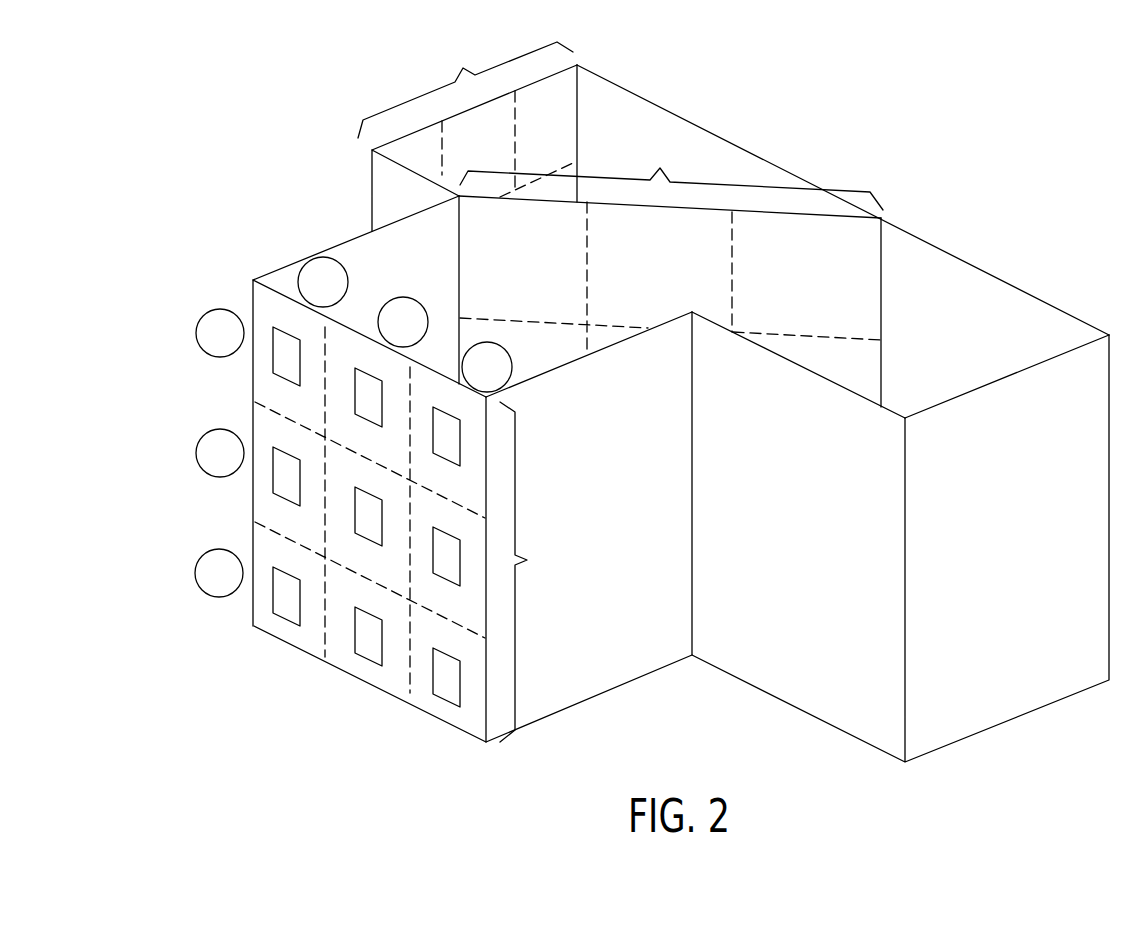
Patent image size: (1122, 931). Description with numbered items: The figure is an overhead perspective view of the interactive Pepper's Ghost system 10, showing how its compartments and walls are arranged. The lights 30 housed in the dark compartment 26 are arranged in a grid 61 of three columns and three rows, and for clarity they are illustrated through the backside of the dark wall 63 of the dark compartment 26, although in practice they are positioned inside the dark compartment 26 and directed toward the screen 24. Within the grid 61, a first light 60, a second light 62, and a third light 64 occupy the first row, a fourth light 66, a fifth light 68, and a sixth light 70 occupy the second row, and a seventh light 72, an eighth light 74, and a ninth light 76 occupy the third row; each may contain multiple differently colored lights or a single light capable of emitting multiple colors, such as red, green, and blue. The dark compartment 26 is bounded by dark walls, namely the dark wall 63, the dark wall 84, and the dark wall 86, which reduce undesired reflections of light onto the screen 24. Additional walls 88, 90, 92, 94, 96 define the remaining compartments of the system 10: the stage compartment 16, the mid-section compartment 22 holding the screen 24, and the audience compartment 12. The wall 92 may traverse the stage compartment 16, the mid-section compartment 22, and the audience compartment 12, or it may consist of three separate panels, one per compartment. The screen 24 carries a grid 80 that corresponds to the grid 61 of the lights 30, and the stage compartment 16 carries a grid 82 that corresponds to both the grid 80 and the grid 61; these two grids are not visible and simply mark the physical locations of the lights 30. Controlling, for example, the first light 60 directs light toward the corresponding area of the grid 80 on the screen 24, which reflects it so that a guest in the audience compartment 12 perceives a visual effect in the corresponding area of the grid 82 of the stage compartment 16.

The interactive Pepper's Ghost system 10 is at (853, 82).
The audience compartment 12 is at (1020, 313).
The stage compartment 16 is at (593, 100).
The mid-section compartment 22 is at (757, 205).
The screen 24 is at (842, 214).
The dark compartment 26 is at (367, 231).
The lights 30 is at (278, 679).
The first light 60 is at (299, 337).
The grid 61 is at (525, 569).
The second light 62 is at (381, 378).
The dark wall 63 is at (280, 290).
The third light 64 is at (459, 418).
The fourth light 66 is at (299, 458).
The fifth light 68 is at (381, 498).
The sixth light 70 is at (459, 538).
The seventh light 72 is at (299, 578).
The eighth light 74 is at (381, 618).
The ninth light 76 is at (459, 658).
The grid 80 is at (671, 174).
The grid 82 is at (465, 88).
The dark wall 84 is at (570, 363).
The dark wall 86 is at (360, 272).
The wall 88 is at (417, 170).
The wall 90 is at (513, 97).
The wall 92 is at (712, 132).
The wall 94 is at (972, 392).
The wall 96 is at (827, 378).